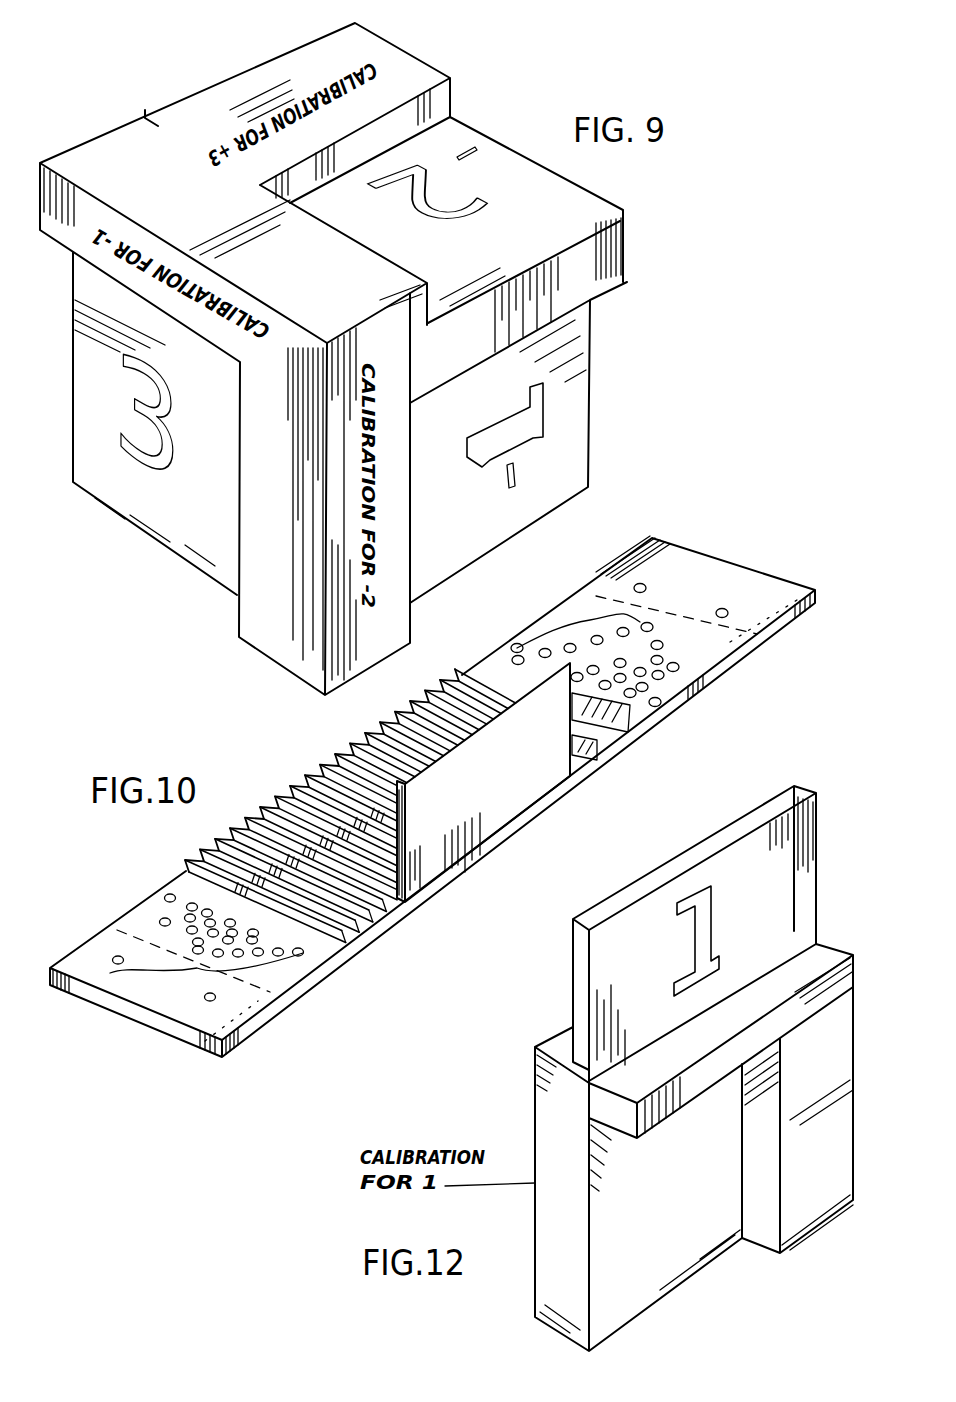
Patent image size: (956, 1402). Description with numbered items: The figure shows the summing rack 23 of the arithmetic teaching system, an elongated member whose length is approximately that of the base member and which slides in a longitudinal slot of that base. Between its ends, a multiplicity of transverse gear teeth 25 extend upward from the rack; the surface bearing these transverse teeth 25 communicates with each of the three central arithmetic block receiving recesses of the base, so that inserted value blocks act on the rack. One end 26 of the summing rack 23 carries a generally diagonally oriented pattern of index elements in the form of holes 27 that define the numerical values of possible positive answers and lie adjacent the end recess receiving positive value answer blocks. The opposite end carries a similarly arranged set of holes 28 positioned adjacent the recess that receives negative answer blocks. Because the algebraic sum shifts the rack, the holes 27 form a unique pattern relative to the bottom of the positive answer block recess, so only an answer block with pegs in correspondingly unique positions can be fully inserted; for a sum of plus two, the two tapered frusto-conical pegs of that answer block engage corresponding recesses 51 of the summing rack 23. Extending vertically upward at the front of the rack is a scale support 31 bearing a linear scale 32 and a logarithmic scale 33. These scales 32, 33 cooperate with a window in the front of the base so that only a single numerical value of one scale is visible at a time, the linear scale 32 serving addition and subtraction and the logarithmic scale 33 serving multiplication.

The summing rack 23 is at (763, 636).
The transverse gear teeth 25 is at (337, 768).
The end of the summing rack 26 is at (758, 577).
The holes 27 is at (590, 620).
The holes 28 is at (197, 968).
The scale support 31 is at (520, 795).
The linear scale 32 is at (580, 738).
The logarithmic scale 33 is at (596, 700).
The recesses 51 is at (637, 633).